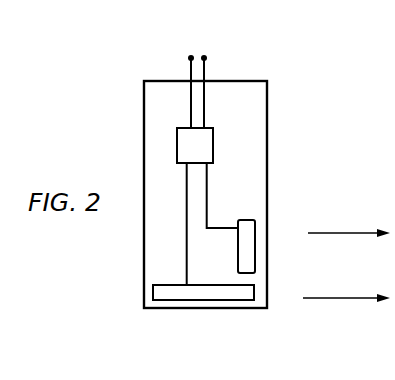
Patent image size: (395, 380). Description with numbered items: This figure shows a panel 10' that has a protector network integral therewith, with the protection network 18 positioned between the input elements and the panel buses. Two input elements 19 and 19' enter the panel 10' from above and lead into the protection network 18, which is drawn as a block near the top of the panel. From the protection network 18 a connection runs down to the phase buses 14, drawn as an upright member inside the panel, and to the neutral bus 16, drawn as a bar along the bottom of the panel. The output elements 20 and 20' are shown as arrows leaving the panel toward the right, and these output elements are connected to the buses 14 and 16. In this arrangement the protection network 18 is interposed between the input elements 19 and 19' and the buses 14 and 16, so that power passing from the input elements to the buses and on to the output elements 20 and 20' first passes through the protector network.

The panel 10' is at (244, 180).
The phase buses 14 is at (253, 225).
The neutral bus 16 is at (167, 295).
The protection network 18 is at (207, 142).
The input element 19 is at (223, 73).
The input element 19' is at (177, 73).
The output element 20 is at (343, 248).
The output element 20' is at (346, 283).